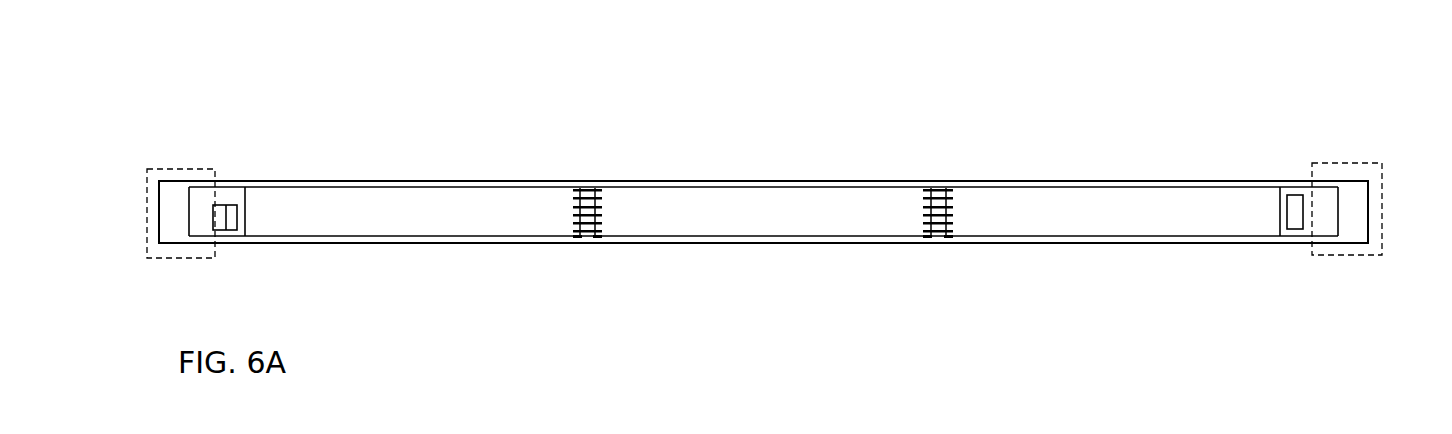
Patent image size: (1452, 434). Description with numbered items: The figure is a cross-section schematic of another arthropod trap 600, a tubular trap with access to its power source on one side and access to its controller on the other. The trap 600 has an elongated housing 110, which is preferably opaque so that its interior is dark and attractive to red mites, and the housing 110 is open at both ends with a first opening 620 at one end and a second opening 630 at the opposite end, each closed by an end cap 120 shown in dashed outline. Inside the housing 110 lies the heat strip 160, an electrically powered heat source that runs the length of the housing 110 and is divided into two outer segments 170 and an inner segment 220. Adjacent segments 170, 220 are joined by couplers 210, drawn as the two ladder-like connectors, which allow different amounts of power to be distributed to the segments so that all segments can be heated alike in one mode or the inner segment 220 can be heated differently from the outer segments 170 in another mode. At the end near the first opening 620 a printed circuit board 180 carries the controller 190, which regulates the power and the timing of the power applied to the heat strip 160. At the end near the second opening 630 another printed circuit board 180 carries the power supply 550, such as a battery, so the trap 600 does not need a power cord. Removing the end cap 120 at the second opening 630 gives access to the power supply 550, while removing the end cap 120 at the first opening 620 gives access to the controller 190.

The arthropod trap 600 is at (1156, 51).
The housing 110 is at (987, 177).
The end cap 120 is at (182, 168).
The heat strip 160 is at (370, 185).
The outer segment 170 is at (368, 237).
The printed circuit board 180 is at (223, 194).
The controller 190 is at (232, 205).
The coupler 210 is at (587, 188).
The inner segment 220 is at (705, 237).
The power supply 550 is at (1297, 230).
The first opening 620 is at (124, 208).
The second opening 630 is at (1393, 219).